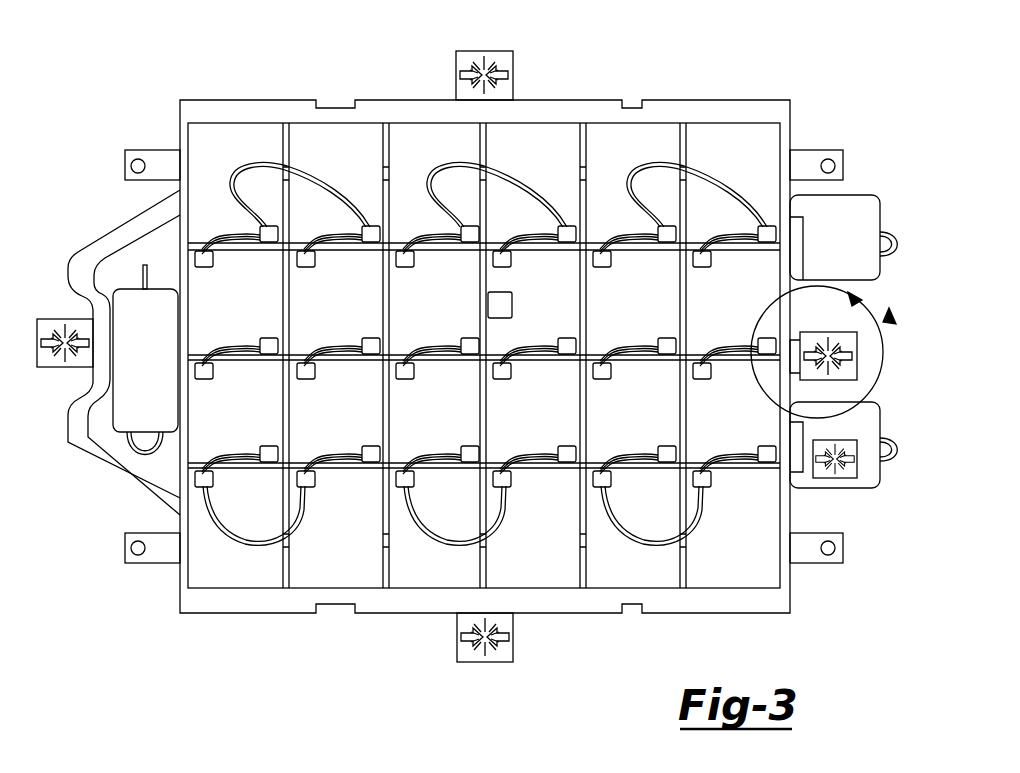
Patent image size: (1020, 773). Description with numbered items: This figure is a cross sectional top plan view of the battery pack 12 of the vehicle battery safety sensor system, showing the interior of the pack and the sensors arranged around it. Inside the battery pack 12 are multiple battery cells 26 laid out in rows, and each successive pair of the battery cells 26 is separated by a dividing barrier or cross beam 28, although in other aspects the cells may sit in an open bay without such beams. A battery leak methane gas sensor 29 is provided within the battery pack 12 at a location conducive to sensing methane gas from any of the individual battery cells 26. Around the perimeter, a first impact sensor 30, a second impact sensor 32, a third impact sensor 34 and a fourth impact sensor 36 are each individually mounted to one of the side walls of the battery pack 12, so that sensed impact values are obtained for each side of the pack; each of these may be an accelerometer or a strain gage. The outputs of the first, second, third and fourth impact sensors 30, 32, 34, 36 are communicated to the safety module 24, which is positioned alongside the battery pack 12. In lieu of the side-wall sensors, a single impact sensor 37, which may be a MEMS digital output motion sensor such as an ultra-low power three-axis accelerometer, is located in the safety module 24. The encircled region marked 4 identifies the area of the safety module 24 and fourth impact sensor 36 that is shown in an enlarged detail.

The battery pack 12 is at (822, 98).
The safety module 24 is at (862, 428).
The battery cells 26 is at (233, 128).
The cross beam 28 is at (288, 132).
The battery leak methane gas sensor 29 is at (514, 304).
The first impact sensor 30 is at (458, 637).
The second impact sensor 32 is at (38, 342).
The third impact sensor 34 is at (504, 50).
The fourth impact sensor 36 is at (858, 356).
The impact sensor 37 is at (857, 468).
The detail view indicator 4 is at (823, 352).